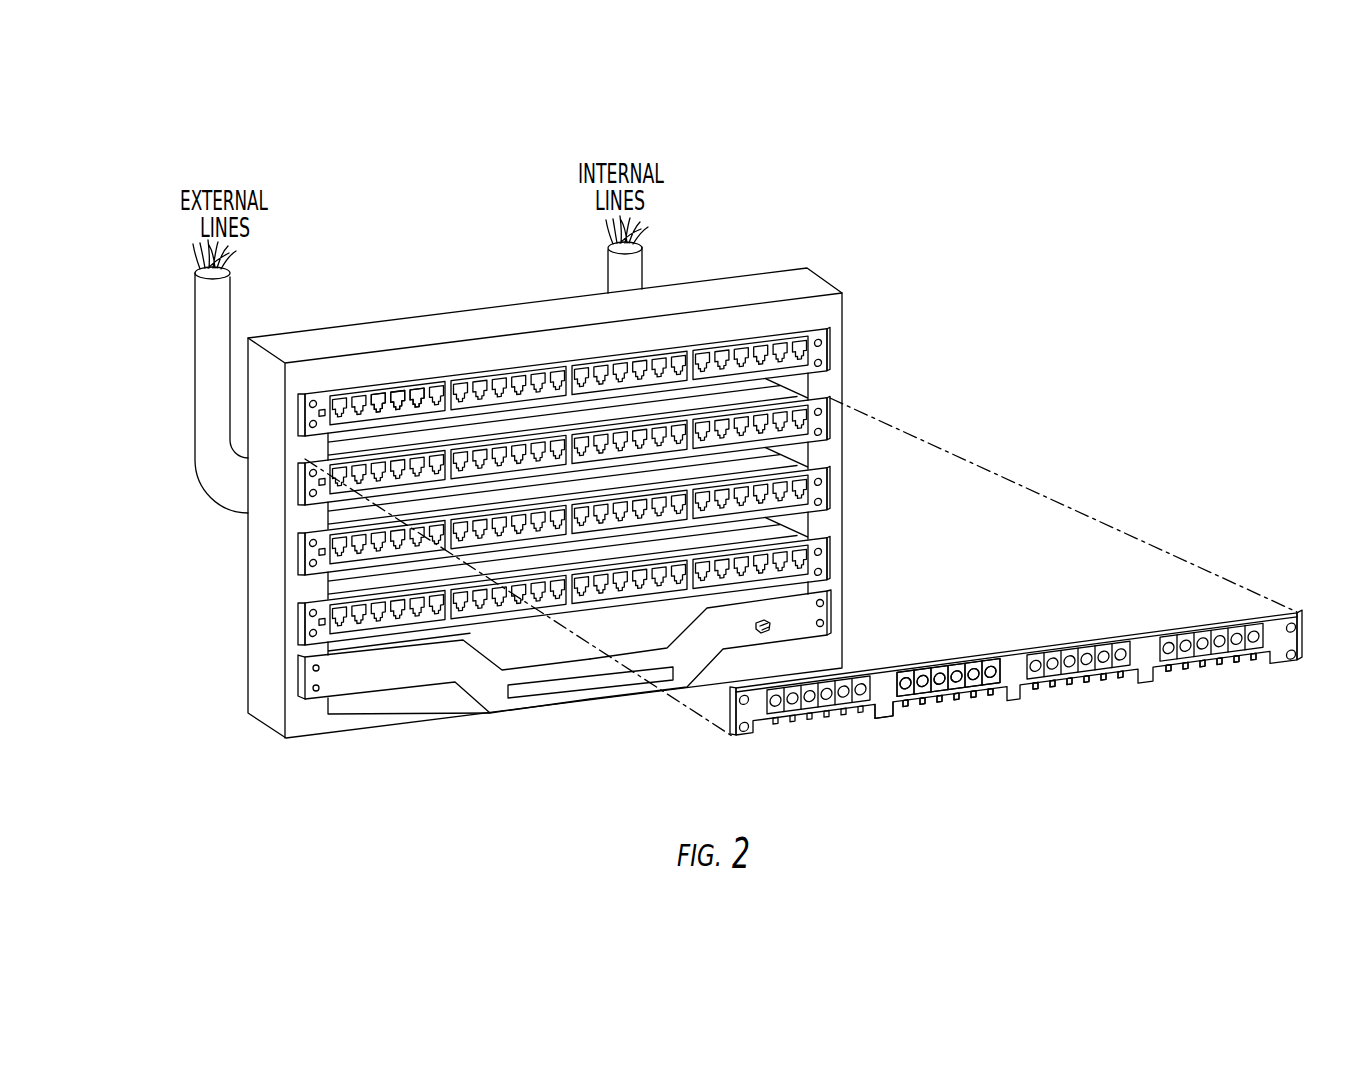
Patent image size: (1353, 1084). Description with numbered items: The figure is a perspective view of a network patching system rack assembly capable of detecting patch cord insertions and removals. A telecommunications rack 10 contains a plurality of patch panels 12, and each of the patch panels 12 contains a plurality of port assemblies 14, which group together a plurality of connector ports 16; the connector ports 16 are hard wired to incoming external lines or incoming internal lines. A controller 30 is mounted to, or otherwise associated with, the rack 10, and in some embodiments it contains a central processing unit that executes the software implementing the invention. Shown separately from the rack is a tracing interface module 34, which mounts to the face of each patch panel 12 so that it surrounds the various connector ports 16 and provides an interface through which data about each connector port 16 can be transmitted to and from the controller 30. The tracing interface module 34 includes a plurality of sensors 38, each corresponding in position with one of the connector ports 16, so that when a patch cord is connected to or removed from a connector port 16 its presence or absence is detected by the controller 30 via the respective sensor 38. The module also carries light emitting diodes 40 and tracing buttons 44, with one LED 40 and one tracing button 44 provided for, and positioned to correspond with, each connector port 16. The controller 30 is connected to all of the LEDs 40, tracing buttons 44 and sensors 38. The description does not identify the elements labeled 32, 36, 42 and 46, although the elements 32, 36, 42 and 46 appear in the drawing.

The telecommunications rack 10 is at (731, 289).
The patch panel 12 is at (822, 417).
The port assembly 14 is at (588, 367).
The connector port 16 is at (418, 394).
The controller 30 is at (365, 673).
The upper mounting bracket 32 is at (773, 625).
The tracing interface module 34 is at (1143, 636).
The mounting tab 36 is at (913, 708).
The sensor 38 is at (1069, 689).
The light emitting diode (LED) 40 is at (991, 661).
The terminal pins 42 is at (1219, 668).
The tracing button 44 is at (975, 698).
The indicator 46 is at (319, 622).